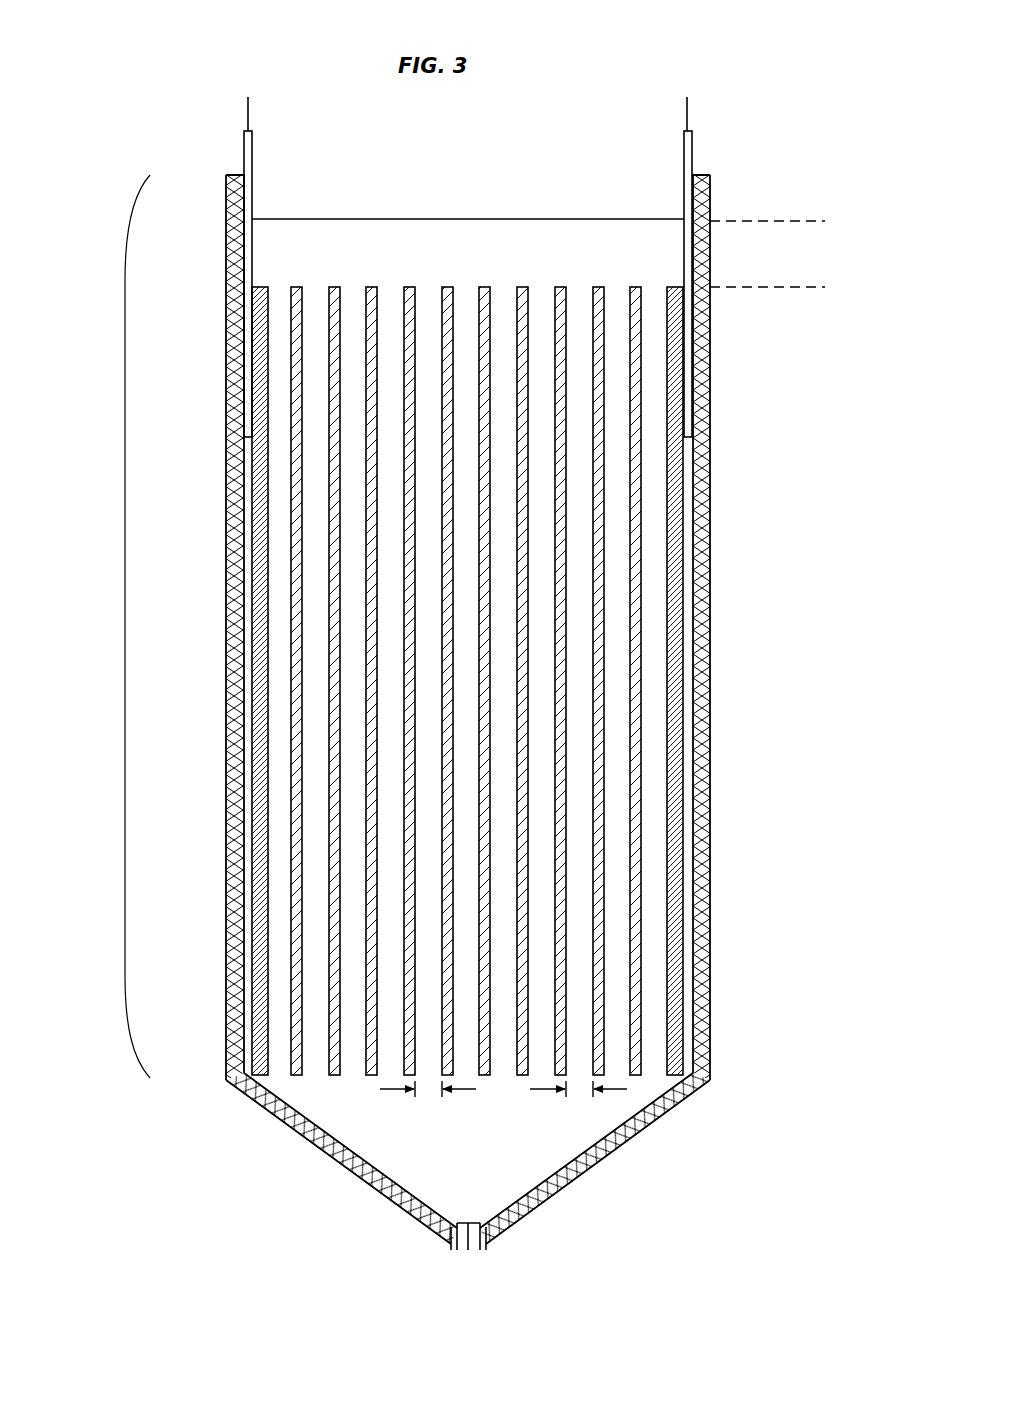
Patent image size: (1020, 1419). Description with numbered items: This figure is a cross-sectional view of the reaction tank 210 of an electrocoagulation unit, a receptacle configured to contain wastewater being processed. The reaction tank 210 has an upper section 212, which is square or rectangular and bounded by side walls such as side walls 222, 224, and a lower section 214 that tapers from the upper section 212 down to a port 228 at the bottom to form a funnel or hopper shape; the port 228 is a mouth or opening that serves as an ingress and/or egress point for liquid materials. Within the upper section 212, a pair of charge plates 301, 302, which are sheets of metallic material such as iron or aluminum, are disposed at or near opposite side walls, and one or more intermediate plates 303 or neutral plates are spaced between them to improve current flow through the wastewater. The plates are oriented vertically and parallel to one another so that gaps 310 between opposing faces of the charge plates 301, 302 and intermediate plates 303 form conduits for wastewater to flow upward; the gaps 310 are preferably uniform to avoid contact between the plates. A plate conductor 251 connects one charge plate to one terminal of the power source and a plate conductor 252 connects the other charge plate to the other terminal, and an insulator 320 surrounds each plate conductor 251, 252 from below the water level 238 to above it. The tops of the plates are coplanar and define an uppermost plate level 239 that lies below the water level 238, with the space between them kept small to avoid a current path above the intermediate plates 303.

The reaction tank 210 is at (769, 67).
The upper section 212 is at (125, 625).
The lower section 214 is at (730, 1087).
The side wall 222 is at (710, 747).
The side wall 224 is at (226, 750).
The port 228 is at (468, 1250).
The water level 238 is at (790, 221).
The uppermost plate level 239 is at (790, 287).
The plate conductor 251 is at (249, 121).
The plate conductor 252 is at (687, 121).
The charge plate 301 is at (259, 287).
The charge plate 302 is at (675, 287).
The intermediate plates 303 is at (560, 287).
The gaps 310 is at (565, 1097).
The insulator 320 is at (252, 176).